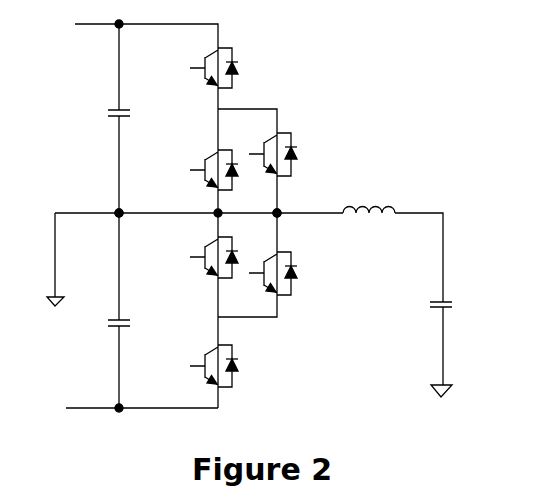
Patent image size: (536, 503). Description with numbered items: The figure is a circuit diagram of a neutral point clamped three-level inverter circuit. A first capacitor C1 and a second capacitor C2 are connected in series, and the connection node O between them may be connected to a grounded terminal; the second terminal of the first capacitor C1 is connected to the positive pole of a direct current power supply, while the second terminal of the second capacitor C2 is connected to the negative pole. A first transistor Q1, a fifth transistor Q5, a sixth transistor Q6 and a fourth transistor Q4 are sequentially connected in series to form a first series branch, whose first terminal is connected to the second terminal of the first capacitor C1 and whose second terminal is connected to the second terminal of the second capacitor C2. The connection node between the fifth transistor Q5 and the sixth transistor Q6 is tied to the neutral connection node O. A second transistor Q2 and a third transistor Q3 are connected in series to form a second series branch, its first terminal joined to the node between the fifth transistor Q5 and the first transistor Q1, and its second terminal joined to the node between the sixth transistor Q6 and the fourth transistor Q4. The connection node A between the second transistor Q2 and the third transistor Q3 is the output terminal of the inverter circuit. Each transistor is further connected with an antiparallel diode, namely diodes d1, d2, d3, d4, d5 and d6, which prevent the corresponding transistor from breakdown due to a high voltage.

The first capacitor C1 is at (101, 115).
The second capacitor C2 is at (101, 325).
The connection node O is at (104, 200).
The connection node A is at (287, 204).
The first transistor Q1 is at (195, 68).
The second transistor Q2 is at (261, 149).
The third transistor Q3 is at (261, 284).
The fourth transistor Q4 is at (193, 366).
The fifth transistor Q5 is at (192, 170).
The sixth transistor Q6 is at (193, 257).
The antiparallel diode d1 is at (251, 65).
The antiparallel diode d2 is at (309, 152).
The antiparallel diode d3 is at (309, 271).
The antiparallel diode d4 is at (247, 364).
The antiparallel diode d5 is at (243, 190).
The antiparallel diode d6 is at (244, 245).